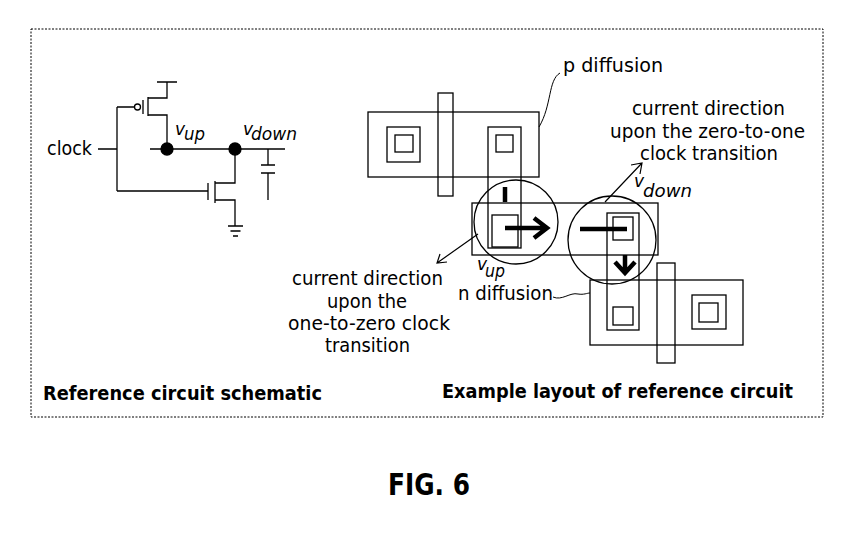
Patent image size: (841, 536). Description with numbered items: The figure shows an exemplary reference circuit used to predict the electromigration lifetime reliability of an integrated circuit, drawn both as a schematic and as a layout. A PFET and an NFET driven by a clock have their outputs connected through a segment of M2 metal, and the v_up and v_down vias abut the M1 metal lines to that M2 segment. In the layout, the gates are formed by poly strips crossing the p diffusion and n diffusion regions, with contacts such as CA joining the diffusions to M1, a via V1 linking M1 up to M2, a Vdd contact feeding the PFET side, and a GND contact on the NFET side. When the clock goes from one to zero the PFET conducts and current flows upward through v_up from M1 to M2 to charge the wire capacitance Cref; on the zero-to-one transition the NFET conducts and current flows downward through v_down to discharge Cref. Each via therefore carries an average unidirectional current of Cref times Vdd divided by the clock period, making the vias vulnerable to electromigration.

The wire capacitance Cref is at (293, 174).
The supply voltage Vdd is at (403, 143).
The polysilicon gate poly is at (438, 193).
The contact CA is at (513, 150).
The M2 metal M2 is at (658, 248).
The M1 metal lines M1 is at (607, 313).
The via 1 V1 is at (639, 222).
The ground contact GND is at (708, 313).